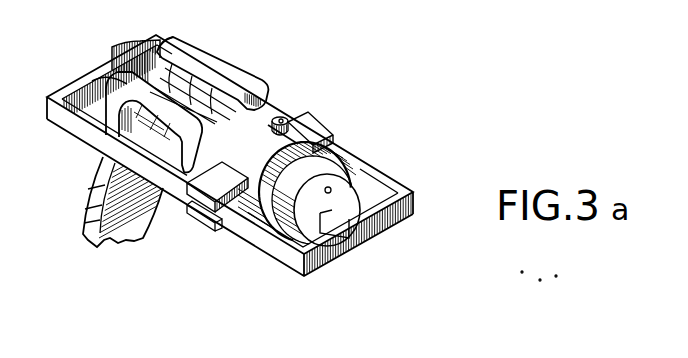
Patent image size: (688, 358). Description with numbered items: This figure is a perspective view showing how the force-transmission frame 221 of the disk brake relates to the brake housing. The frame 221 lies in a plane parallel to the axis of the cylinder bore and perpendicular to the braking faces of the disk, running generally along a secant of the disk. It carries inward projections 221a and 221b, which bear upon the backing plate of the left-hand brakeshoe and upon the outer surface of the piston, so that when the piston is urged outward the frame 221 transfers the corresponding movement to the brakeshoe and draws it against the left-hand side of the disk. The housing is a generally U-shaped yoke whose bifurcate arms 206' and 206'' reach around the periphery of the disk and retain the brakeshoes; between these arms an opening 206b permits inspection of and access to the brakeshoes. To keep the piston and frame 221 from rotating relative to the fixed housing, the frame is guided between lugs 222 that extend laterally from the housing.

The frame 221 is at (283, 253).
The inward projection 221a is at (340, 217).
The inward projection 221b is at (108, 75).
The bifurcate arm 206' is at (234, 69).
The bifurcate arm 206'' is at (114, 122).
The opening 206b is at (166, 37).
The lug 222 is at (312, 128).